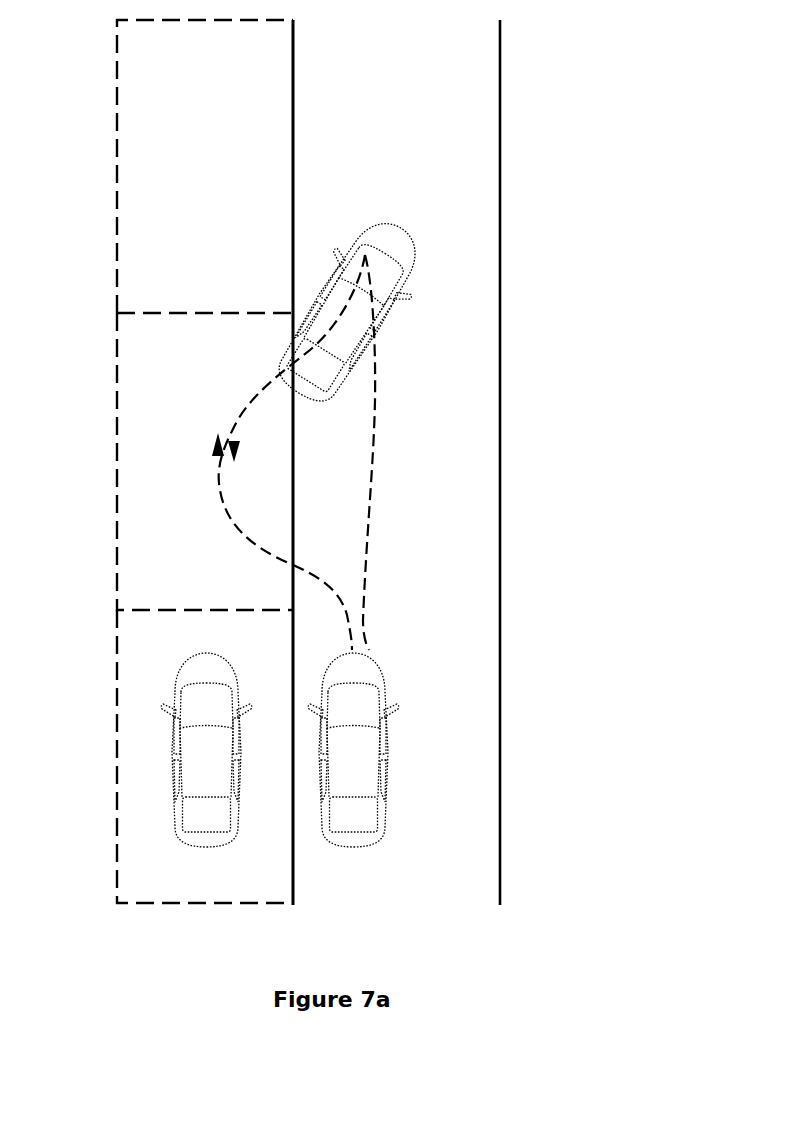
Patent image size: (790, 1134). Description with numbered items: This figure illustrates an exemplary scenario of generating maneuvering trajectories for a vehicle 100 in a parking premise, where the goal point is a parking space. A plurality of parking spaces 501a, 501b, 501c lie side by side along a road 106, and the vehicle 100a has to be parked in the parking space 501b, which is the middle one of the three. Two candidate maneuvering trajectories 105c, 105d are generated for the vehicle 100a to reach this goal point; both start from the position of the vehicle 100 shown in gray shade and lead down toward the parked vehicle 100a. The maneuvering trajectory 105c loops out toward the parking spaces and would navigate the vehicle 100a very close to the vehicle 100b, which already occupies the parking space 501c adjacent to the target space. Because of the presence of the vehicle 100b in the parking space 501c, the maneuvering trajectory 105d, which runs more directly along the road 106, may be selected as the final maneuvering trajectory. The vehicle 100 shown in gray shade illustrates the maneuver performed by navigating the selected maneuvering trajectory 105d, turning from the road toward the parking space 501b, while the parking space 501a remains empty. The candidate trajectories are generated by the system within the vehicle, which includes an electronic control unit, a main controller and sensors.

The vehicle 100 is at (378, 238).
The vehicle 100a is at (352, 832).
The vehicle 100b is at (177, 757).
The maneuvering trajectory 105c is at (315, 570).
The maneuvering trajectory 105d is at (372, 482).
The road 106 is at (500, 758).
The parking space 501a is at (117, 122).
The parking space 501b is at (112, 375).
The parking space 501c is at (115, 658).